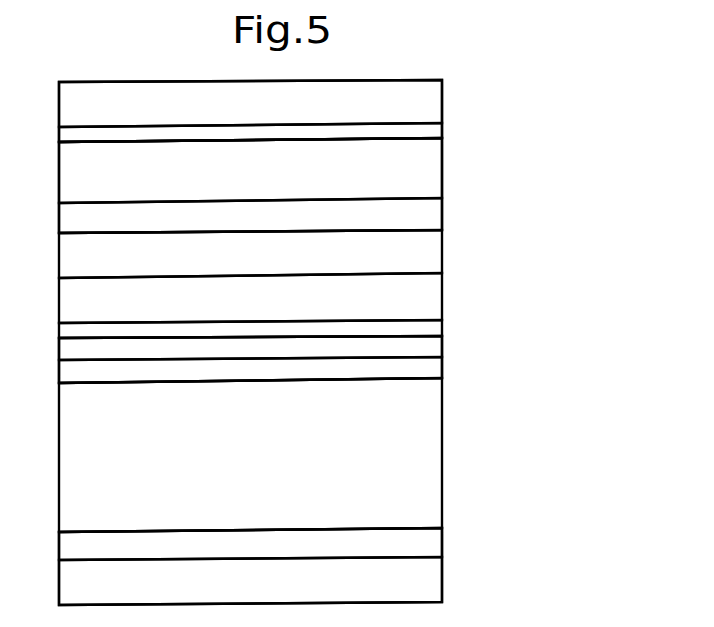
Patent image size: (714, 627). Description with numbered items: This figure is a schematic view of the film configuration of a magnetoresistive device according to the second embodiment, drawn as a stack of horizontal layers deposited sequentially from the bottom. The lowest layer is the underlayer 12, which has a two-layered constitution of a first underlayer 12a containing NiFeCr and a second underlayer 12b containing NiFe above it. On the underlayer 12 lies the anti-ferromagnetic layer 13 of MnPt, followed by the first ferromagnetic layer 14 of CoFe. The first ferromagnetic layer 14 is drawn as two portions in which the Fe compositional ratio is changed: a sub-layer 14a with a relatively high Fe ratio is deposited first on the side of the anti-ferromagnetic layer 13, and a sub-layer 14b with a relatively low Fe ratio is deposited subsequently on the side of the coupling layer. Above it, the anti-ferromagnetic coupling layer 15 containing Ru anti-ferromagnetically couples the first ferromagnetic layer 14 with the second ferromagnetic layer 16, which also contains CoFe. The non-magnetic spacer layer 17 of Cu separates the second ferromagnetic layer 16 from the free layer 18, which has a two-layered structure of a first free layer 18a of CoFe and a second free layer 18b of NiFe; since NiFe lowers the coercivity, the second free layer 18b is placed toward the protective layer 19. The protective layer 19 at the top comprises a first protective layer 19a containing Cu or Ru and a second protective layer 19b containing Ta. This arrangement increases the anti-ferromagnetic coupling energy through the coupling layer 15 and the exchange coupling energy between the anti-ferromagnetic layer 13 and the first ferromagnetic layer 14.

The underlayer 12 is at (550, 540).
The first underlayer 12a is at (412, 583).
The second underlayer 12b is at (412, 547).
The anti-ferromagnetic layer 13 is at (412, 444).
The first ferromagnetic layer 14 is at (548, 342).
The first ferromagnetic sub-layer with relatively high Fe compositional ratio 14a is at (412, 370).
The first ferromagnetic sub-layer with relatively low Fe compositional ratio 14b is at (412, 350).
The anti-ferromagnetic coupling layer 15 is at (412, 328).
The second ferromagnetic layer 16 is at (412, 297).
The non-magnetic spacer layer 17 is at (412, 253).
The free layer 18 is at (560, 170).
The first free layer 18a is at (412, 217).
The second free layer 18b is at (412, 175).
The protective layer 19 is at (560, 93).
The first protective layer 19a is at (412, 134).
The second protective layer 19b is at (412, 103).